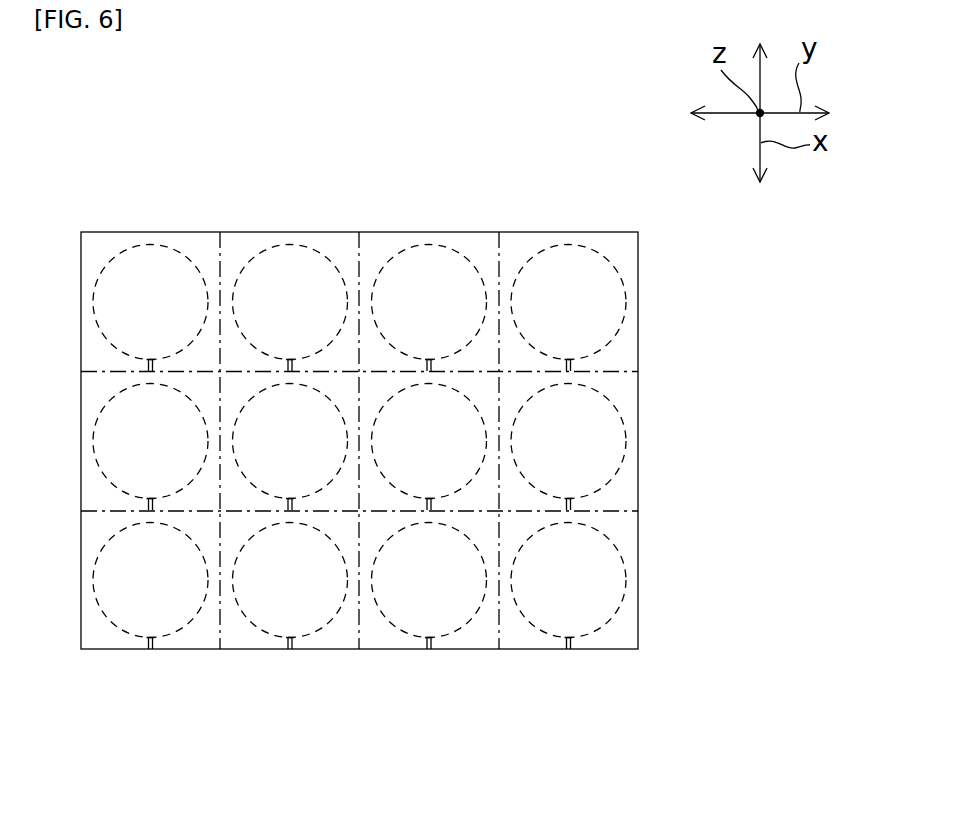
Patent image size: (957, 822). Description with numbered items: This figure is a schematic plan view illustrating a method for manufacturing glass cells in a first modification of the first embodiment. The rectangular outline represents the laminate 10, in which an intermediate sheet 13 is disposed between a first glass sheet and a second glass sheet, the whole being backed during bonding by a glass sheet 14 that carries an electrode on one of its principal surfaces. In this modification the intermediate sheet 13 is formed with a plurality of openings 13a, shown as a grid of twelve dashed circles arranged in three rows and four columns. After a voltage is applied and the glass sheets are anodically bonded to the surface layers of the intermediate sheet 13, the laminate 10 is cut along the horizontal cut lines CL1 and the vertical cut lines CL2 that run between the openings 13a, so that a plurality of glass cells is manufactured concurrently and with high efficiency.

The laminate 10 is at (537, 203).
The intermediate sheet 13 is at (640, 320).
The opening 13a is at (628, 448).
The glass sheet 14 is at (639, 618).
The cut line CL1 is at (611, 512).
The cut line CL2 is at (498, 609).